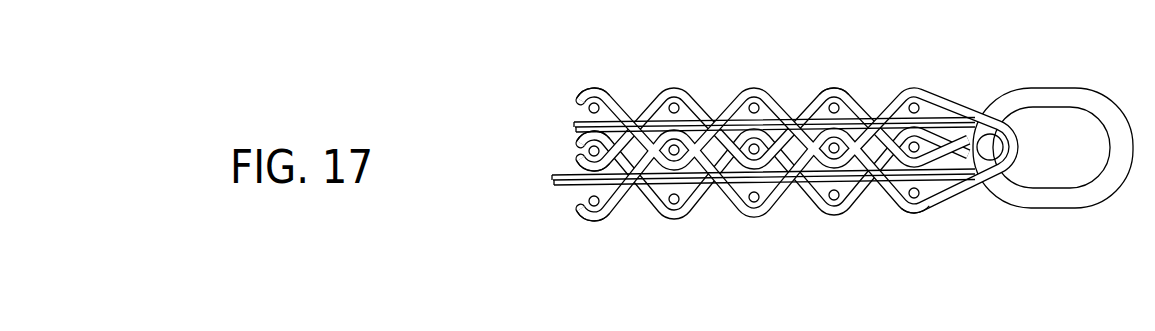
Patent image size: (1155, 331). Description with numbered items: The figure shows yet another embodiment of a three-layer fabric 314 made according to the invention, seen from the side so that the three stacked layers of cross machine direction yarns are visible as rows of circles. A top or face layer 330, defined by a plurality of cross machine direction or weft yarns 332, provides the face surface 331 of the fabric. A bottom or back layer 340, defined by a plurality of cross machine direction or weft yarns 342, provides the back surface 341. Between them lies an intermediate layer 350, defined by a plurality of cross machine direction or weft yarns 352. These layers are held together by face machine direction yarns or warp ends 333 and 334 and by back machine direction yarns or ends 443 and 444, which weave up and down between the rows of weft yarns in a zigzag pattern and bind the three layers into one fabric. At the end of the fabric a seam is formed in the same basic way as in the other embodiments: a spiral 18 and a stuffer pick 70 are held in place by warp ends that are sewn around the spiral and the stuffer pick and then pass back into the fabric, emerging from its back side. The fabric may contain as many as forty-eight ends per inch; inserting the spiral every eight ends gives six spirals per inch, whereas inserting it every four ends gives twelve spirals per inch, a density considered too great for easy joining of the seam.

The spiral 18 is at (1080, 102).
The stuffer pick 70 is at (994, 148).
The three-layer fabric 314 is at (785, 75).
The top or face layer 330 is at (548, 110).
The face surface 331 is at (838, 90).
The weft yarns of the face layer 332 is at (677, 106).
The face machine direction yarn or warp end 333 is at (586, 91).
The face machine direction yarn or warp end 334 is at (578, 163).
The bottom or back layer 340 is at (556, 202).
The back surface 341 is at (913, 209).
The weft yarns of the back layer 342 is at (597, 203).
The intermediate layer 350 is at (548, 152).
The weft yarns of the intermediate layer 352 is at (838, 144).
The back machine direction yarn or end 443 is at (578, 142).
The back machine direction yarn or end 444 is at (580, 216).